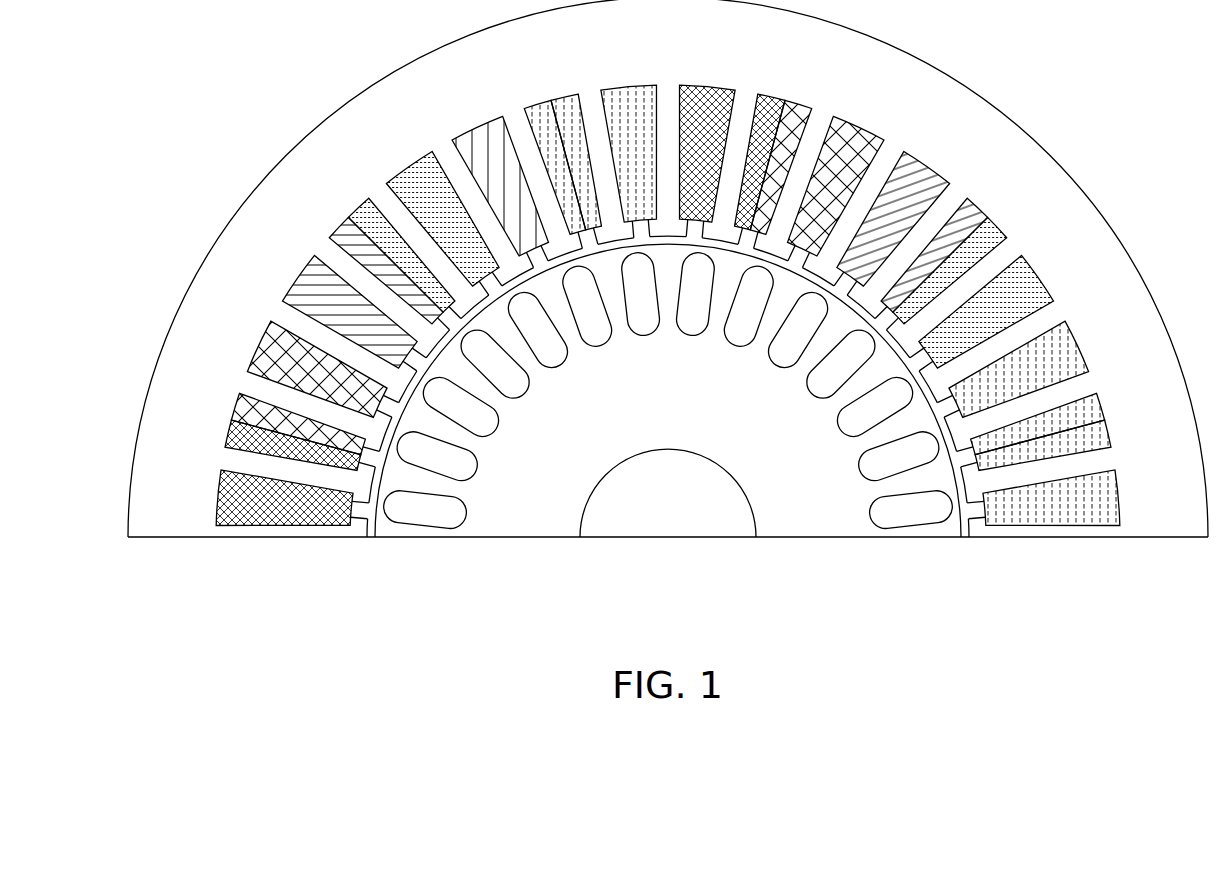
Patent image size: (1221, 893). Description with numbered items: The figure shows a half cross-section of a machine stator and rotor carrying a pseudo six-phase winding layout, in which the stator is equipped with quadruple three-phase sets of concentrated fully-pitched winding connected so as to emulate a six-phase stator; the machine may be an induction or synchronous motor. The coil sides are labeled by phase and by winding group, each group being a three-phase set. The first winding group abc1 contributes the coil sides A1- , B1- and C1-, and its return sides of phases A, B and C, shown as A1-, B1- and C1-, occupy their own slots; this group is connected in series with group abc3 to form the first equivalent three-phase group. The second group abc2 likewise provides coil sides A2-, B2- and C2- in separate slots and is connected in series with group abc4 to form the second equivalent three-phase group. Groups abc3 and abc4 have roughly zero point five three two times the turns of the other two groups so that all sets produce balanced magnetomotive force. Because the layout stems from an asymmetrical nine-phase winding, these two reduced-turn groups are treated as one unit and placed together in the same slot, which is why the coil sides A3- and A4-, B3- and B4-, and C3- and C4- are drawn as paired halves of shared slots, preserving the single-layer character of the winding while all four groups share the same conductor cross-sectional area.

The phase A winding group abc1 negative side A1- is at (633, 139).
The phase A winding group abc2 negative side A2- is at (500, 174).
The phase A winding group abc3 negative side A3- is at (580, 148).
The phase A winding group abc4 negative side A4- is at (546, 153).
The phase B winding group abc1 negative side B1- is at (298, 373).
The phase B winding group abc2 negative side B2- is at (265, 502).
The phase B winding group abc3 negative side B3- is at (278, 419).
The phase B winding group abc4 negative side B4- is at (274, 450).
The phase C winding group abc1 negative side C1- is at (1006, 310).
The phase C winding group abc2 negative side C2- is at (901, 208).
The phase C winding group abc3 negative side C3- is at (967, 261).
The phase C winding group abc4 negative side C4- is at (949, 245).